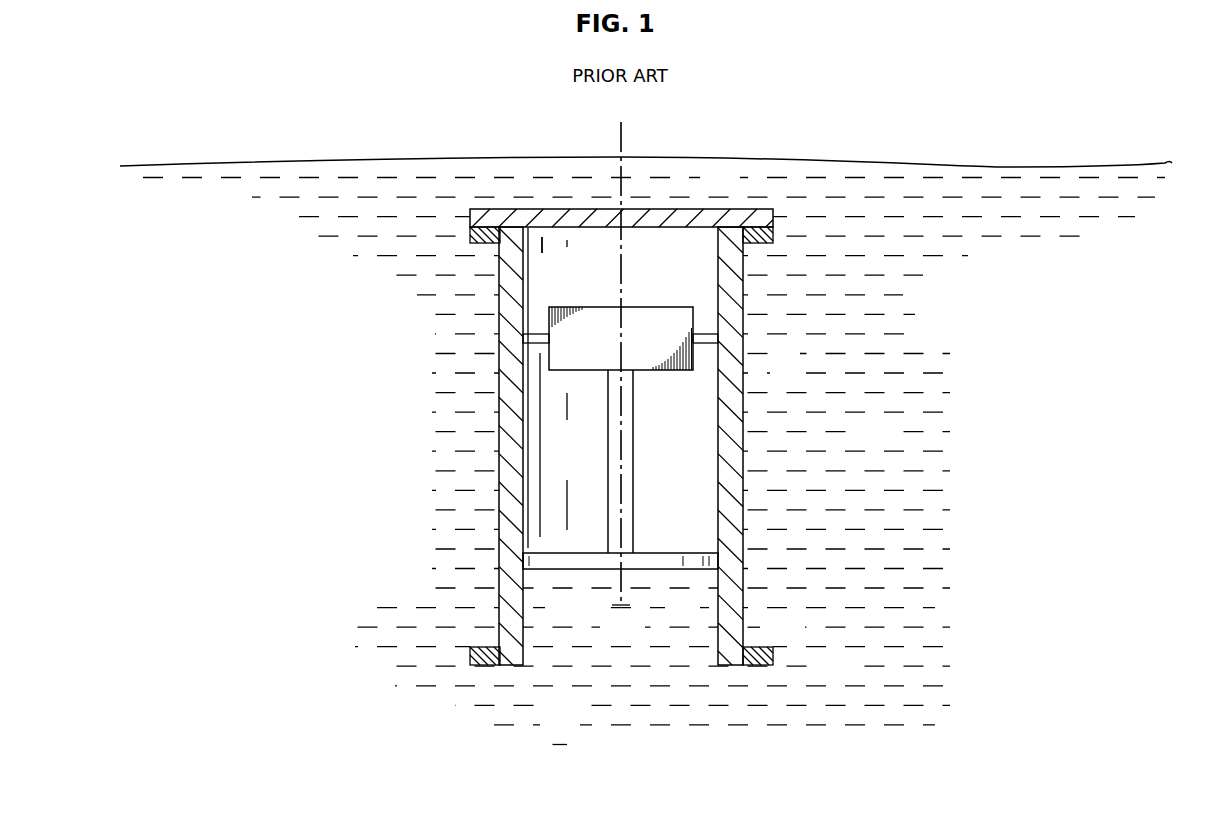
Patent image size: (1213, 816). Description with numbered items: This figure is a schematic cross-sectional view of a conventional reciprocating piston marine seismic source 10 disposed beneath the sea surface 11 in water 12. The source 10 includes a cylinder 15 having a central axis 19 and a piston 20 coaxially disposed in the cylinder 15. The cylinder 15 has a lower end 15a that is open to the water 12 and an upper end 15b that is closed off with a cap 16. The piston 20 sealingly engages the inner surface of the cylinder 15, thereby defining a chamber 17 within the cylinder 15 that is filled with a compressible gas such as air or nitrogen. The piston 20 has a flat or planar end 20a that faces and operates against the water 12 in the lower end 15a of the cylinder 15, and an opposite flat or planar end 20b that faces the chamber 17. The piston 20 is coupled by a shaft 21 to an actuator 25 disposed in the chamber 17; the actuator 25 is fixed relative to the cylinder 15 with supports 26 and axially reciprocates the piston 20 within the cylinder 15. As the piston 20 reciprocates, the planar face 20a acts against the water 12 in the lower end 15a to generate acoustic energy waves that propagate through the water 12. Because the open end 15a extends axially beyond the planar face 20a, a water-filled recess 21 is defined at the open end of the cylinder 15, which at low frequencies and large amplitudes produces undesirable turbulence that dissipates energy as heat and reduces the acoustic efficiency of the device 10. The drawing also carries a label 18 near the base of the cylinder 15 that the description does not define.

The reciprocating piston marine seismic source 10 is at (321, 118).
The sea surface 11 is at (871, 160).
The water 12 is at (857, 444).
The cylinder 15 is at (744, 374).
The lower end 15a is at (744, 630).
The upper end 15b is at (499, 250).
The cap 16 is at (706, 209).
The chamber 17 is at (657, 424).
The base 18 is at (783, 657).
The central axis 19 is at (619, 137).
The piston 20 is at (677, 571).
The planar end 20a is at (578, 570).
The planar end 20b is at (664, 553).
The shaft 21 is at (607, 461).
The actuator 25 is at (657, 307).
The supports 26 is at (535, 332).